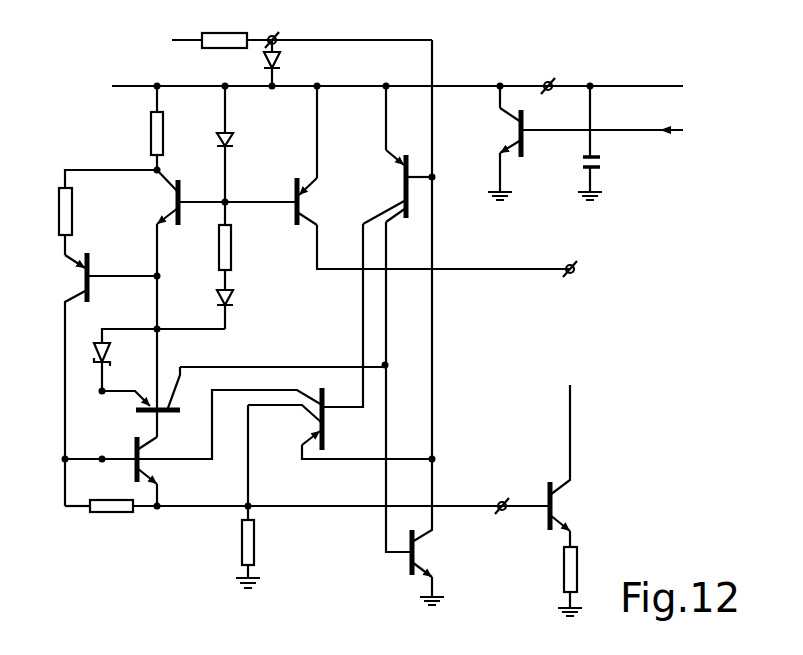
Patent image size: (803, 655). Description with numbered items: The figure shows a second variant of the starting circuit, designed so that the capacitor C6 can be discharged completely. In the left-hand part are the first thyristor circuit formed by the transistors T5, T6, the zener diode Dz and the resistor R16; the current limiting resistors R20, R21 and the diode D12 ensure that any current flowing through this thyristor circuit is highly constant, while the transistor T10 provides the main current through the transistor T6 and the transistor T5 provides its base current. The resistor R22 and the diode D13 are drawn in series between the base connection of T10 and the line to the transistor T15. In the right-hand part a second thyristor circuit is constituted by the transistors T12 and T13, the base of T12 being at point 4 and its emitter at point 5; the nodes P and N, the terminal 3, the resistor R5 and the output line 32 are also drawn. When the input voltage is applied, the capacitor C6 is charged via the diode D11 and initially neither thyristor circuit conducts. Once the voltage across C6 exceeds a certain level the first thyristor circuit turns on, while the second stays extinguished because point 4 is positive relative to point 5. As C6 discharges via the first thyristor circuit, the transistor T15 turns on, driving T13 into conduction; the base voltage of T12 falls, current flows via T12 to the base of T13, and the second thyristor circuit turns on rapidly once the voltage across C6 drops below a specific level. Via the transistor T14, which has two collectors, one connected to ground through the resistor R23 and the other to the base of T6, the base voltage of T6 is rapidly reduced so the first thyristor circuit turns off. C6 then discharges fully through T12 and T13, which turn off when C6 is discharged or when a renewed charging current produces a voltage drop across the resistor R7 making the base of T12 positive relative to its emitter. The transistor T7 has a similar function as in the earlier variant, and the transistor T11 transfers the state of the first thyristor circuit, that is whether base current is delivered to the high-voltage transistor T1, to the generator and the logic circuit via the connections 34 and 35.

The resistor R7 is at (213, 33).
The point 4 is at (279, 27).
The diode D11 is at (278, 62).
The current limiting resistor R20 is at (164, 135).
The diode D12 is at (233, 141).
The transistor T10 is at (227, 197).
The current limiting resistor R21 is at (59, 216).
The transistor T5 is at (85, 278).
The resistor R22 is at (233, 256).
The diode D13 is at (233, 309).
The zener diode Dz is at (106, 348).
The transistor T15 is at (165, 405).
The transistor T6 is at (140, 460).
The resistor R16 is at (112, 513).
The resistor R23 is at (254, 560).
The transistor T14 is at (324, 402).
The transistor T11 is at (303, 202).
The transistor T12 is at (404, 176).
The node P is at (428, 180).
The node N is at (394, 359).
The transistor T13 is at (415, 551).
The terminal 3 is at (502, 492).
The high-voltage transistor T1 is at (553, 506).
The resistor R5 is at (578, 584).
The transistor T7 is at (518, 130).
The point 5 is at (548, 71).
The capacitor C6 is at (600, 171).
The output line 32 is at (637, 133).
The connection 34 is at (575, 266).
The connection 35 is at (575, 273).